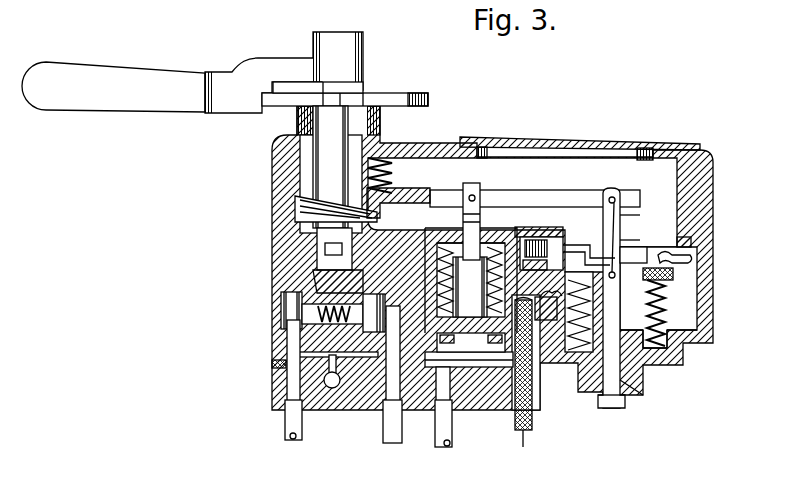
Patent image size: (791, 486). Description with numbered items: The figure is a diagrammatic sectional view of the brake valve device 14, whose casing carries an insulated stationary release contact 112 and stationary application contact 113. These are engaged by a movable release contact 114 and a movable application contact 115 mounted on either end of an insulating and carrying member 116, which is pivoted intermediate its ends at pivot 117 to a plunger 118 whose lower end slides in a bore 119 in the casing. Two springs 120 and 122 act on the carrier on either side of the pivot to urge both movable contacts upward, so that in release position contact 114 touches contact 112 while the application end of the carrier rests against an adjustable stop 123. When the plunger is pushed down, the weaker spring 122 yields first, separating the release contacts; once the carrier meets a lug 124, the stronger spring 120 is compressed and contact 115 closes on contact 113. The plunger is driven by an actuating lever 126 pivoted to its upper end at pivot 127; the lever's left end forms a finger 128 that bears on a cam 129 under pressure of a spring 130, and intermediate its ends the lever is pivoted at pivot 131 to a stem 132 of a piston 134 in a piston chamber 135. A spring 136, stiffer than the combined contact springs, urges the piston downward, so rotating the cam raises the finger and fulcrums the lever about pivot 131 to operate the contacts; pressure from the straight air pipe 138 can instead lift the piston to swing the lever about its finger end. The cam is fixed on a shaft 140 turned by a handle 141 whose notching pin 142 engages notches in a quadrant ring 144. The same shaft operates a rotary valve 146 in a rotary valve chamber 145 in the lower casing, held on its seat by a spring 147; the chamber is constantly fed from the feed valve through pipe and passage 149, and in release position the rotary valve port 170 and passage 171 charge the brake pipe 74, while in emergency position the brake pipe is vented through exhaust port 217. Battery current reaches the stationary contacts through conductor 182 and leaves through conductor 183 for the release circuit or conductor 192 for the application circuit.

The brake valve device 14 is at (726, 160).
The brake pipe 74 is at (287, 420).
The stationary release contact 112 is at (690, 258).
The stationary application contact 113 is at (560, 346).
The movable release contact 114 is at (675, 275).
The movable application contact 115 is at (575, 285).
The insulating and carrying member 116 is at (668, 297).
The pivot 117 is at (617, 240).
The plunger 118 is at (615, 222).
The bore 119 is at (630, 390).
The spring 120 is at (578, 378).
The spring 122 is at (667, 338).
The adjustable stop 123 is at (547, 228).
The lug 124 is at (672, 313).
The actuating lever 126 is at (523, 200).
The pivot 127 is at (612, 190).
The finger 128 is at (380, 207).
The cam 129 is at (318, 210).
The spring 130 is at (392, 176).
The pivot 131 is at (492, 183).
The stem 132 is at (474, 218).
The piston 134 is at (430, 287).
The piston chamber 135 is at (473, 362).
The spring 136 is at (433, 247).
The straight air pipe 138 is at (433, 440).
The shaft 140 is at (327, 180).
The handle 141 is at (90, 80).
The notching pin 142 is at (263, 112).
The quadrant ring 144 is at (388, 100).
The rotary valve chamber 145 is at (295, 305).
The rotary valve 146 is at (300, 322).
The spring 147 is at (310, 290).
The pipe and passage 149 is at (393, 410).
The rotary valve port 170 is at (295, 354).
The passage 171 is at (290, 385).
The conductor 182 is at (568, 256).
The conductor 183 is at (548, 245).
The conductor 192 is at (524, 428).
The exhaust port 217 is at (332, 390).